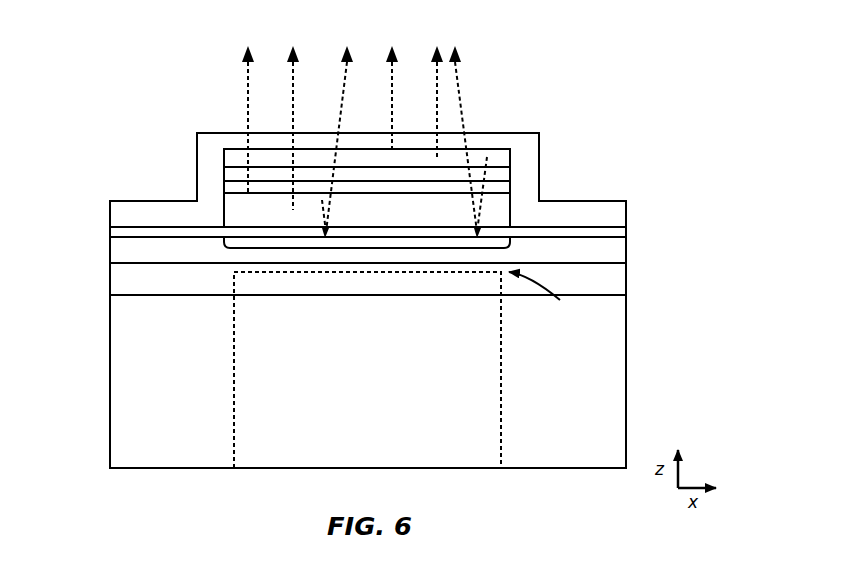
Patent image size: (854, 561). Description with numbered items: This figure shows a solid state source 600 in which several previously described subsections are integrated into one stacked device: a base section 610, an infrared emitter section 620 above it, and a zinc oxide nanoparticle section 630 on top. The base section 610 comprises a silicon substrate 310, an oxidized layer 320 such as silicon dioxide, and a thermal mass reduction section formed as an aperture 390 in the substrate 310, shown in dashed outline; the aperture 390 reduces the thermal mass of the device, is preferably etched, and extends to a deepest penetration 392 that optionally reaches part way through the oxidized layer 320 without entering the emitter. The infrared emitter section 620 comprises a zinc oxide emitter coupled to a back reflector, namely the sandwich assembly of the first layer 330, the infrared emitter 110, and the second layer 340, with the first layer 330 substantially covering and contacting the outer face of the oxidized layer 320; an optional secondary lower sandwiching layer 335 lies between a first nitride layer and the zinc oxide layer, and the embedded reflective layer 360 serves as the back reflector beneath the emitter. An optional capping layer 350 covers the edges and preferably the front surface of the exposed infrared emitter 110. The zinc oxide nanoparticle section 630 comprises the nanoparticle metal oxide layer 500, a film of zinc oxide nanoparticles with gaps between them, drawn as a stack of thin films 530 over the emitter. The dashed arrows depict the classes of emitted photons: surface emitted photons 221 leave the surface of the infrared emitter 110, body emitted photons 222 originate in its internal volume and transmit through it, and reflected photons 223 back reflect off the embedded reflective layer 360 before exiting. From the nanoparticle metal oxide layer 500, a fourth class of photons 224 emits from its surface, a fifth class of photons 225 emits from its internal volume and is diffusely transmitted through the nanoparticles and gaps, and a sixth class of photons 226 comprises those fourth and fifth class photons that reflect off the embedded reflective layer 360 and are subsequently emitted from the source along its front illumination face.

The light emitting device 600 is at (120, 80).
The base section 610 is at (666, 346).
The infrared emitter section 620 is at (666, 205).
The zinc oxide nanoparticle section 630 is at (606, 146).
The substrate 310 is at (108, 407).
The oxidized layer 320 is at (627, 273).
The first layer 330 is at (108, 253).
The secondary lower sandwiching layer 335 is at (627, 237).
The second layer 340 is at (222, 190).
The capping layer 350 is at (590, 200).
The embedded reflective layer 360 is at (295, 237).
The aperture 390 is at (502, 358).
The deepest penetration 392 is at (549, 302).
The nanoparticle metal oxide layer 500 is at (476, 149).
The layer stack 530 is at (512, 175).
The infrared emitter 110 is at (422, 221).
The surface emitted photons 221 is at (247, 73).
The body emitted photons 222 is at (291, 73).
The reflected photons 223 is at (345, 73).
The fourth class of photons 224 is at (390, 73).
The fifth class of photons 225 is at (435, 73).
The sixth class of photons 226 is at (460, 70).